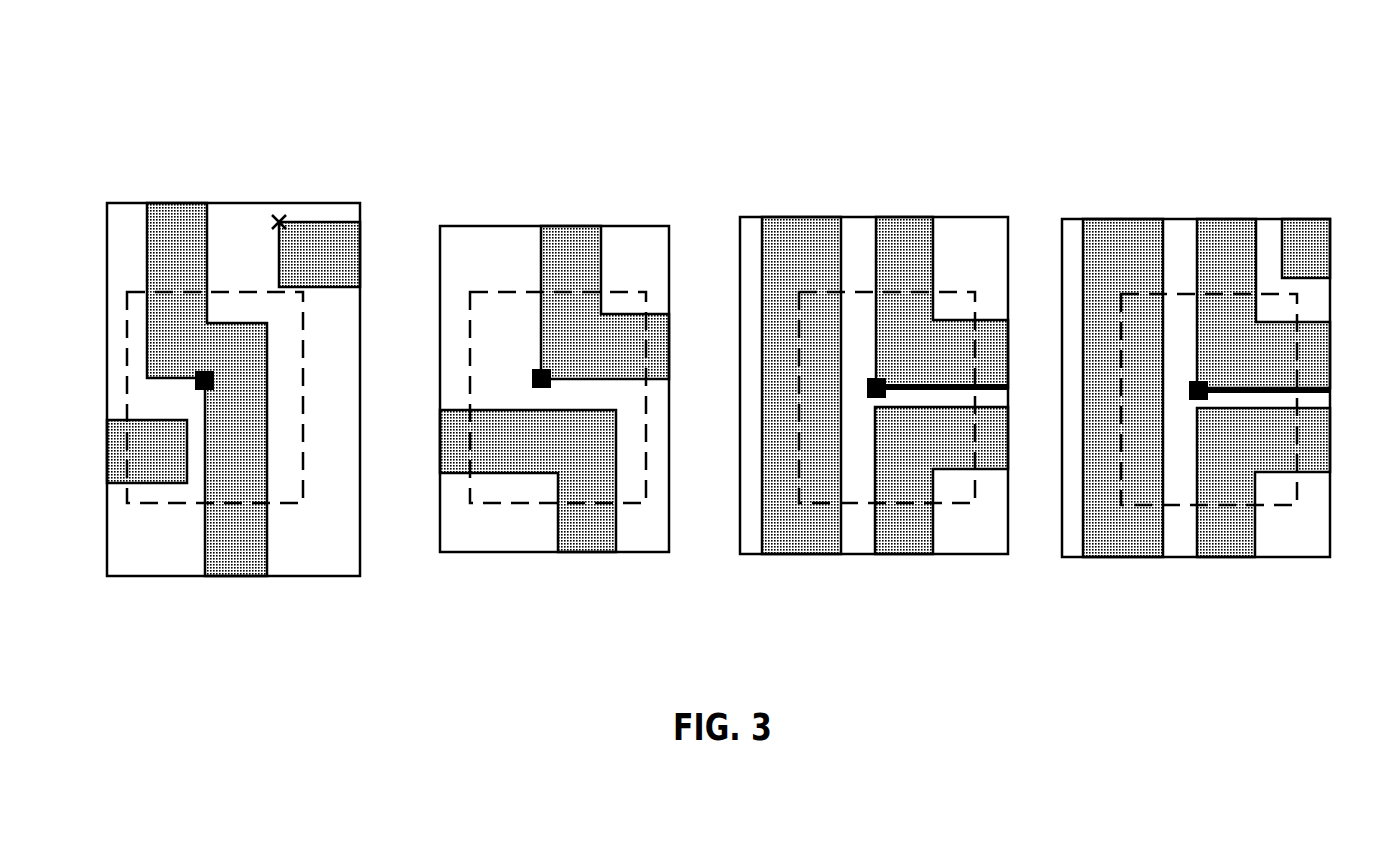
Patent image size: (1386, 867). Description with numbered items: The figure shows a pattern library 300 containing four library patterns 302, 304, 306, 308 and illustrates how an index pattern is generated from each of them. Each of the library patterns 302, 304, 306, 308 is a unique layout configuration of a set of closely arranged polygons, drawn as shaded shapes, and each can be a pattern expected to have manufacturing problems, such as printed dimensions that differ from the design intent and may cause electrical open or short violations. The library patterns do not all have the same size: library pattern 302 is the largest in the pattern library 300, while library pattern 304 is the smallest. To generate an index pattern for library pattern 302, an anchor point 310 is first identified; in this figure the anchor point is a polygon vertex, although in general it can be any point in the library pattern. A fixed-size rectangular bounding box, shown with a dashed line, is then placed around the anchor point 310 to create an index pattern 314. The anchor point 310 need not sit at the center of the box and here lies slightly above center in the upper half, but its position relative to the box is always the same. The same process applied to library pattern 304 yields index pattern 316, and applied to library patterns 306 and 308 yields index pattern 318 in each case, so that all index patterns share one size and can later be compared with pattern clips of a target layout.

The pattern library 300 is at (822, 48).
The library pattern 302 is at (233, 377).
The library pattern 304 is at (561, 376).
The library pattern 306 is at (874, 334).
The library pattern 308 is at (1196, 335).
The anchor point 310 is at (214, 378).
The index pattern 314 is at (303, 526).
The index pattern 316 is at (646, 526).
The index pattern 318 is at (975, 526).